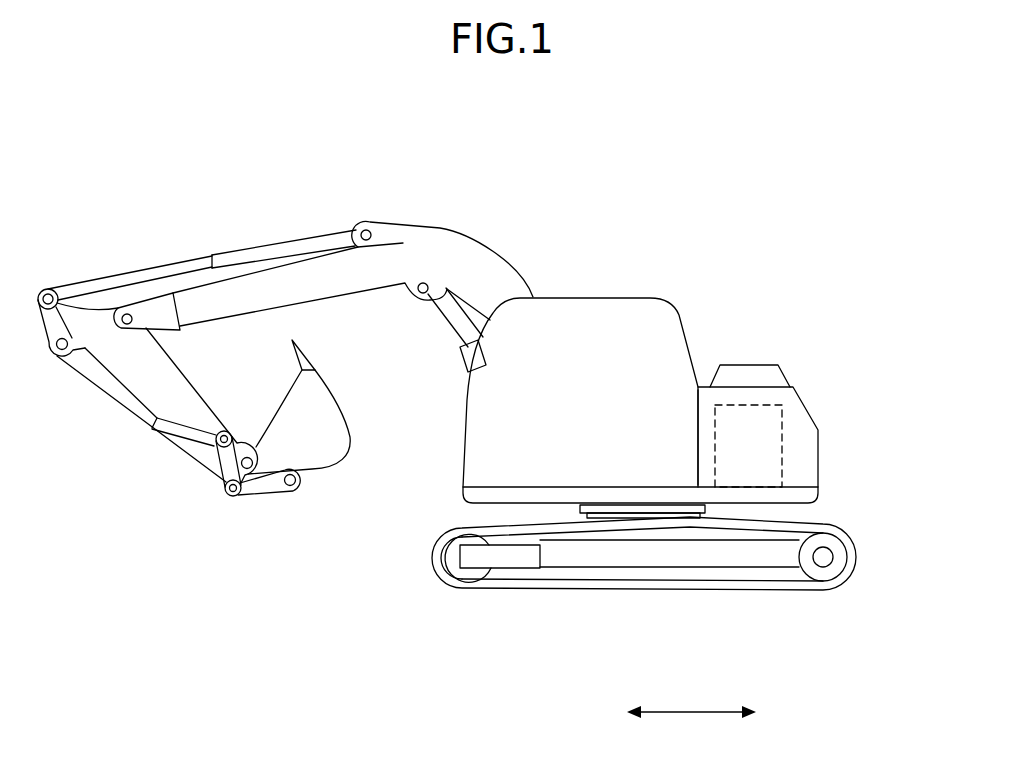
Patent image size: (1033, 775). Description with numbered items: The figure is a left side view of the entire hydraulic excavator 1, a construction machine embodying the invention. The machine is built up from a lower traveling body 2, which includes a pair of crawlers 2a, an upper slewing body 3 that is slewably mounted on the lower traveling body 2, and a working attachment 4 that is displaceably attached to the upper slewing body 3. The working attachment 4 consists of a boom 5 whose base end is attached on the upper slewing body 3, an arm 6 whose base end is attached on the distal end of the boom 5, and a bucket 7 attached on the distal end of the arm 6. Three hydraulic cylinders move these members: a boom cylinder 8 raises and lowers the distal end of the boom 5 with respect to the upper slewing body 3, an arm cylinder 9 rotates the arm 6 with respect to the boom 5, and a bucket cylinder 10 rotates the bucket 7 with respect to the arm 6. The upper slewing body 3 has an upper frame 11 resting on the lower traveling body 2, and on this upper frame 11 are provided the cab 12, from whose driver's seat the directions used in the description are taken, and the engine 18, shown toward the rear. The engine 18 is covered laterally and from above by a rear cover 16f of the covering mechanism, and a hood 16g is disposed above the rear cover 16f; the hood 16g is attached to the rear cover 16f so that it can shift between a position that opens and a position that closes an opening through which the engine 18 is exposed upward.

The hydraulic excavator 1 is at (703, 210).
The lower traveling body 2 is at (871, 558).
The crawlers 2a is at (838, 529).
The upper slewing body 3 is at (823, 365).
The working attachment 4 is at (218, 203).
The boom 5 is at (458, 250).
The arm 6 is at (170, 367).
The bucket 7 is at (340, 413).
The boom cylinder 8 is at (450, 321).
The arm cylinder 9 is at (290, 243).
The bucket cylinder 10 is at (122, 402).
The upper frame 11 is at (468, 501).
The cab 12 is at (590, 316).
The rear cover 16f is at (697, 406).
The hood 16g is at (751, 364).
The engine 18 is at (714, 456).